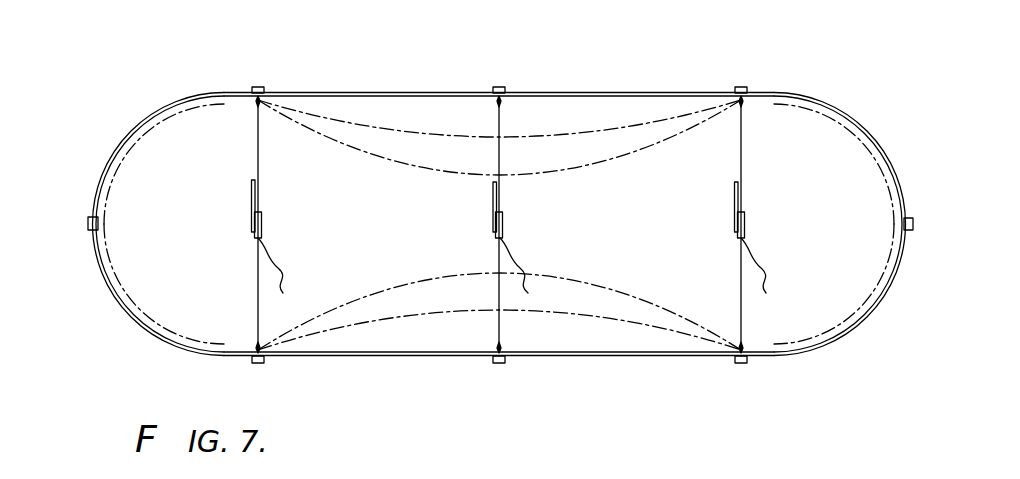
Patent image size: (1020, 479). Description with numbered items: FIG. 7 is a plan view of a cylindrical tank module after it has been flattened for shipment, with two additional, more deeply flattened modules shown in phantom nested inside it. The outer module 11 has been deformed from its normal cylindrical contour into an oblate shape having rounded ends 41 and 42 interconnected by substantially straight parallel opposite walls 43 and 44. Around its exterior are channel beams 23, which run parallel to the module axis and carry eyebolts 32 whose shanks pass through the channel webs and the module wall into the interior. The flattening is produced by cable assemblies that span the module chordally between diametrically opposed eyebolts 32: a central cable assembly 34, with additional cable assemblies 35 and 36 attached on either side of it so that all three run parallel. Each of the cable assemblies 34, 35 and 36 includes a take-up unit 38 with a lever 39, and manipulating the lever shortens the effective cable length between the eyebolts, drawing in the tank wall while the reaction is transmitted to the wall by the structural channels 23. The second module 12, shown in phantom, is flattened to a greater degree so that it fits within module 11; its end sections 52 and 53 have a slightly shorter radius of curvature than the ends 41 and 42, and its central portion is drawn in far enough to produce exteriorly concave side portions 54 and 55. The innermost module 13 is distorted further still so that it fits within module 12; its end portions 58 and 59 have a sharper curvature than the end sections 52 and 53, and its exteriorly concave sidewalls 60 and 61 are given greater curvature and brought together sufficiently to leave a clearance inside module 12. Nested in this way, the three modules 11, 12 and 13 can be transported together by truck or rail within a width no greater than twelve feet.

The module 11 is at (505, 225).
The module 12 is at (523, 137).
The module 13 is at (542, 174).
The channel beam 23 is at (253, 88).
The eyebolt 32 is at (271, 93).
The cable assembly 34 is at (498, 260).
The cable assembly 35 is at (257, 154).
The cable assembly 36 is at (746, 150).
The take-up unit 38 is at (262, 220).
The lever 39 is at (251, 196).
The rounded end 41 is at (108, 162).
The rounded end 42 is at (905, 192).
The straight parallel wall 43 is at (455, 92).
The straight parallel wall 44 is at (418, 358).
The end section 52 is at (104, 180).
The end section 53 is at (887, 263).
The exteriorly concave side portion 54 is at (427, 135).
The exteriorly concave side portion 55 is at (575, 316).
The end portion 58 is at (108, 243).
The end portion 59 is at (902, 244).
The exteriorly concave sidewall 60 is at (395, 163).
The exteriorly concave sidewall 61 is at (578, 296).